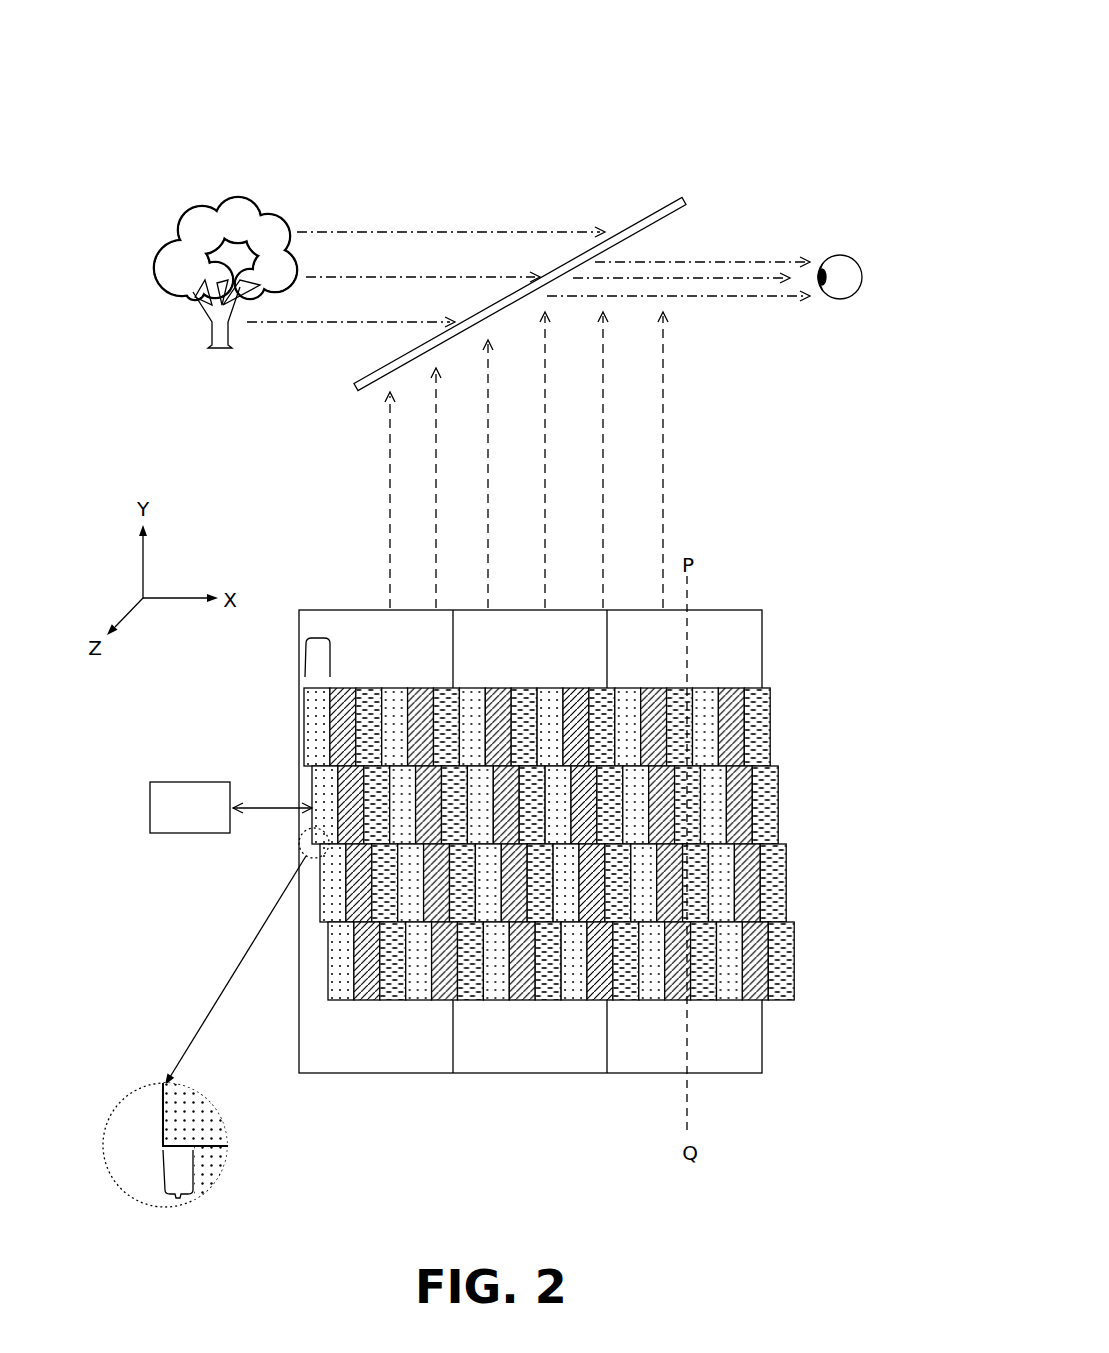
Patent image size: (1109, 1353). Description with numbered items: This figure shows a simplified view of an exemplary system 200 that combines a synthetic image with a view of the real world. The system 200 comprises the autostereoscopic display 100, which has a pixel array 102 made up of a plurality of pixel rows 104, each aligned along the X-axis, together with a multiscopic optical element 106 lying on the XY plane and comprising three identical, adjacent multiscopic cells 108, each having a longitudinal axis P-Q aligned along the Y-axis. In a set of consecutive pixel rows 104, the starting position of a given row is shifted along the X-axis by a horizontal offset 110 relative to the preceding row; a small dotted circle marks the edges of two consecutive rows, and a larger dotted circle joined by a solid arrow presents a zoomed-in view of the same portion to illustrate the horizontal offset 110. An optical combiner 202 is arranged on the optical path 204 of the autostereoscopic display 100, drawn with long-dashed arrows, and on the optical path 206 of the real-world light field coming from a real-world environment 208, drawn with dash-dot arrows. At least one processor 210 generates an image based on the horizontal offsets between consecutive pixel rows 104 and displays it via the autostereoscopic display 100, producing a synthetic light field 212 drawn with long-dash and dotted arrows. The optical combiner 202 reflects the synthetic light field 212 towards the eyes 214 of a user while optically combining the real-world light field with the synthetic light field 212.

The autostereoscopic display 100 is at (872, 609).
The pixel array 102 is at (795, 688).
The pixel rows 104 is at (318, 638).
The multiscopic optical element 106 is at (293, 1153).
The multiscopic cells 108 is at (300, 1085).
The horizontal offset 110 is at (178, 1196).
The system 200 is at (792, 73).
The optical combiner 202 is at (520, 231).
The optical path 204 is at (597, 460).
The optical path 206 is at (426, 201).
The real-world environment 208 is at (225, 202).
The processor 210 is at (231, 807).
The synthetic light field 212 is at (678, 211).
The eyes 214 is at (853, 199).